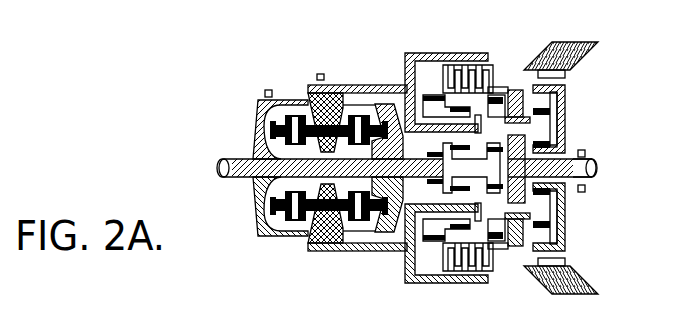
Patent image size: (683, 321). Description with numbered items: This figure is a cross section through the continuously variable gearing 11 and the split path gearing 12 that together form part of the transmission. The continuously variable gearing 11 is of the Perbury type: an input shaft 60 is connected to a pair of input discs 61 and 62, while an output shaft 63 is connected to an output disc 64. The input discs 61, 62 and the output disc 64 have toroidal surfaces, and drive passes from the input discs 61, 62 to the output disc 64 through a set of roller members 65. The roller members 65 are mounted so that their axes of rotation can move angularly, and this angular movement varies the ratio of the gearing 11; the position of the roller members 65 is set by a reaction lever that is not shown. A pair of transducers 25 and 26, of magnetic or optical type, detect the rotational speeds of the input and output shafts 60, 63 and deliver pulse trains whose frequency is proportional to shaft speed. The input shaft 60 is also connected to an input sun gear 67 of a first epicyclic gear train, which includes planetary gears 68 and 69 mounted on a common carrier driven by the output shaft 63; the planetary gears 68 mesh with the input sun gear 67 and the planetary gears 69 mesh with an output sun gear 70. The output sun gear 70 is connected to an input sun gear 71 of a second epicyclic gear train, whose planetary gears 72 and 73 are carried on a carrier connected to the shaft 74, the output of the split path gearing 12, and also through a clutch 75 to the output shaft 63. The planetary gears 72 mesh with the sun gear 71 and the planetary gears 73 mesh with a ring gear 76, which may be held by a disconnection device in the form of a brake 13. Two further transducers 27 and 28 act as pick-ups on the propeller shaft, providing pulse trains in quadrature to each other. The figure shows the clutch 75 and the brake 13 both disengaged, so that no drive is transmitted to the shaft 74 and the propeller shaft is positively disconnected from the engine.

The continuously variable gearing 11 is at (302, 156).
The split path gearing 12 is at (529, 162).
The brake 13 is at (563, 60).
The transducer 25 is at (265, 94).
The transducer 26 is at (342, 67).
The transducer 27 is at (587, 153).
The transducer 28 is at (582, 193).
The input shaft 60 is at (232, 178).
The input disc 61 is at (268, 231).
The input disc 62 is at (383, 230).
The output shaft 63 is at (392, 86).
The output disc 64 is at (308, 88).
The roller members 65 is at (293, 113).
The input sun gear 67 is at (405, 54).
The planetary gears 68 is at (433, 110).
The planetary gears 69 is at (490, 96).
The output sun gear 70 is at (474, 203).
The input sun gear 71 is at (497, 170).
The planetary gears 72 is at (512, 92).
The planetary gears 73 is at (538, 110).
The shaft 74 is at (590, 175).
The clutch 75 is at (472, 95).
The ring gear 76 is at (563, 148).